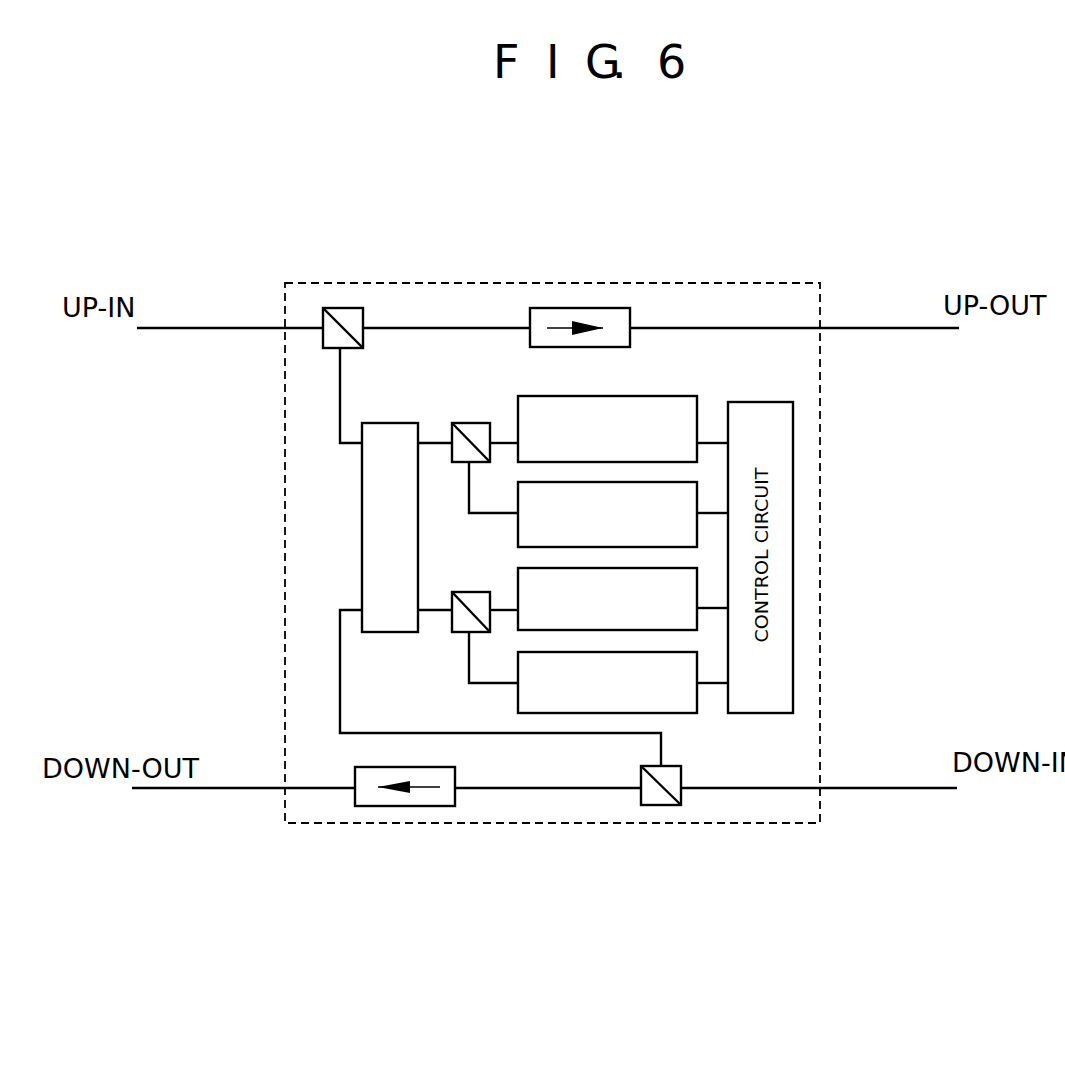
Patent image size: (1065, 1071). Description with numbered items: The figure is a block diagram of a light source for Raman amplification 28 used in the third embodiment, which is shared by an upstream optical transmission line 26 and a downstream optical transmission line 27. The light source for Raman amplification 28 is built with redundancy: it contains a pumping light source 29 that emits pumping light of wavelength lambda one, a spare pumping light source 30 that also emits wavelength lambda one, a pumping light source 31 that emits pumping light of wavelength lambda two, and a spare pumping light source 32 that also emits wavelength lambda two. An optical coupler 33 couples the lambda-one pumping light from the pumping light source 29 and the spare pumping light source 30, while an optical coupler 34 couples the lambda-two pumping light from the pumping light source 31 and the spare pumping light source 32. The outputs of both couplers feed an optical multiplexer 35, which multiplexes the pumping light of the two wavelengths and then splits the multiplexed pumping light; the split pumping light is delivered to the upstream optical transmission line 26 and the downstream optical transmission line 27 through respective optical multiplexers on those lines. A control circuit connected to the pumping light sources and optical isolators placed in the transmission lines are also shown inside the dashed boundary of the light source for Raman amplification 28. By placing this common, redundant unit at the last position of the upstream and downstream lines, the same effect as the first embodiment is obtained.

The upstream optical transmission line 26 is at (220, 328).
The downstream optical transmission line 27 is at (907, 788).
The light source for Raman amplification 28 is at (768, 283).
The pumping light source 29 is at (625, 396).
The spare pumping light source 30 is at (698, 495).
The pumping light source 31 is at (697, 622).
The spare pumping light source 32 is at (518, 697).
The optical coupler 33 is at (471, 423).
The optical coupler 34 is at (470, 592).
The optical multiplexer 35 is at (362, 527).